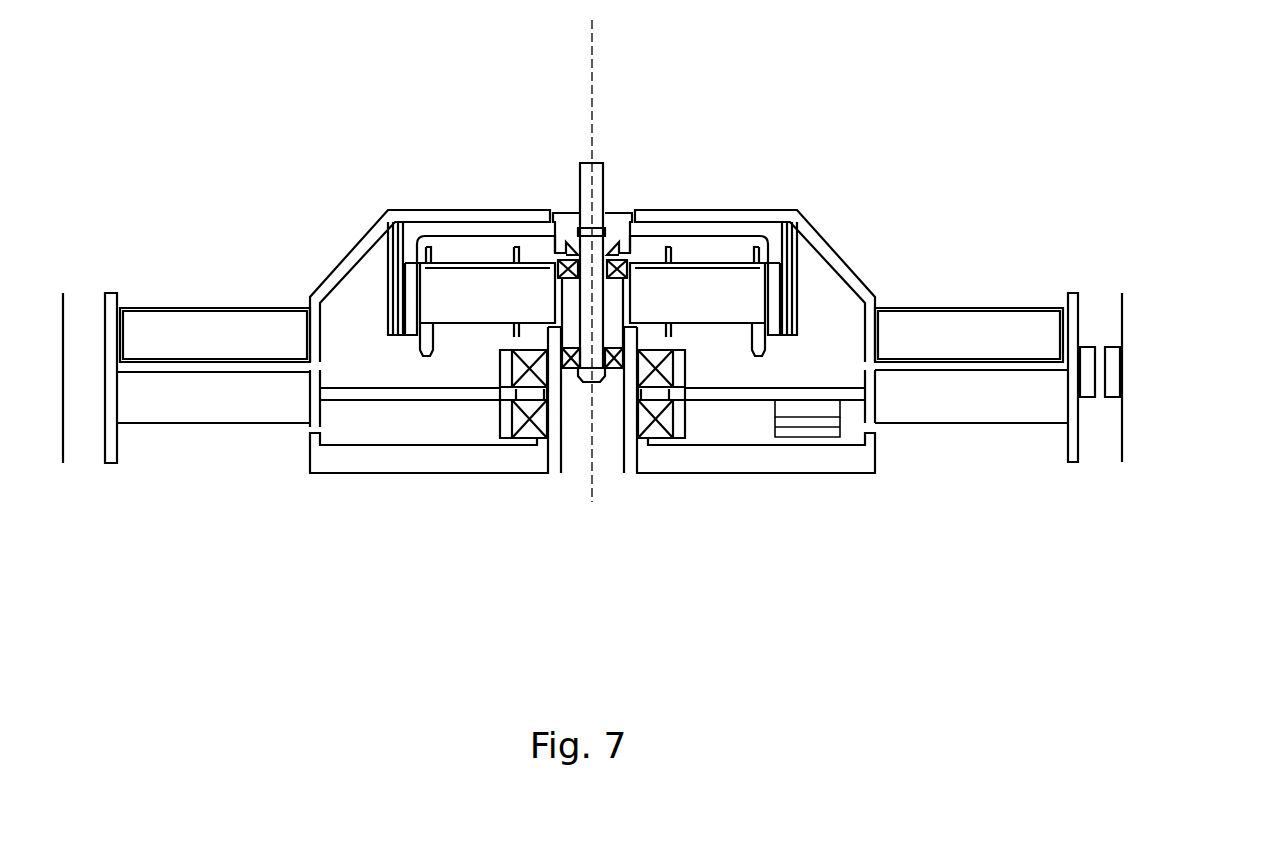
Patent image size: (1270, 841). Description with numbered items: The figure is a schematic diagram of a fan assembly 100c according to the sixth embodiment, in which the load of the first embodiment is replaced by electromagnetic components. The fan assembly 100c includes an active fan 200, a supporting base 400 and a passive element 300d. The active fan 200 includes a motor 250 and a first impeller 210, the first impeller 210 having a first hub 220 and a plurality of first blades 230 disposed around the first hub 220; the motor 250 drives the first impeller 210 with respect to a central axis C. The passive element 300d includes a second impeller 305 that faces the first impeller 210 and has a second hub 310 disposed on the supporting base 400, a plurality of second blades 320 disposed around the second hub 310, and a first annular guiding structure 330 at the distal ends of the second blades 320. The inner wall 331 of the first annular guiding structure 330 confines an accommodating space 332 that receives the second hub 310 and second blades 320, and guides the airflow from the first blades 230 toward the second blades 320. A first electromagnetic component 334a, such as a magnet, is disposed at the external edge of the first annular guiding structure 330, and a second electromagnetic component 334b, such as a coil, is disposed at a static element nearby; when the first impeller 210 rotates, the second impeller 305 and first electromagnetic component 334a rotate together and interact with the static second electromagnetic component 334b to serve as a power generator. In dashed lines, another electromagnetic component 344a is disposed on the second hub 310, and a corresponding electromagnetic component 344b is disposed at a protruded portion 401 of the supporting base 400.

The fan assembly 100c is at (1193, 114).
The active fan 200 is at (848, 107).
The first impeller 210 is at (735, 154).
The first hub 220 is at (744, 218).
The first blades 230 is at (915, 320).
The motor 250 is at (652, 283).
The passive element 300d is at (915, 650).
The second impeller 305 is at (1068, 598).
The second hub 310 is at (850, 393).
The second blades 320 is at (912, 405).
The first annular guiding structure 330 is at (1075, 467).
The inner wall 331 is at (1066, 292).
The accommodating space 332 is at (978, 360).
The first electromagnetic component 334a is at (1087, 400).
The second electromagnetic component 334b is at (1115, 367).
The electromagnetic component 344a is at (788, 407).
The electromagnetic component 344b is at (800, 435).
The supporting base 400 is at (647, 475).
The protruded portion 401 is at (693, 460).
The central axis C is at (593, 280).